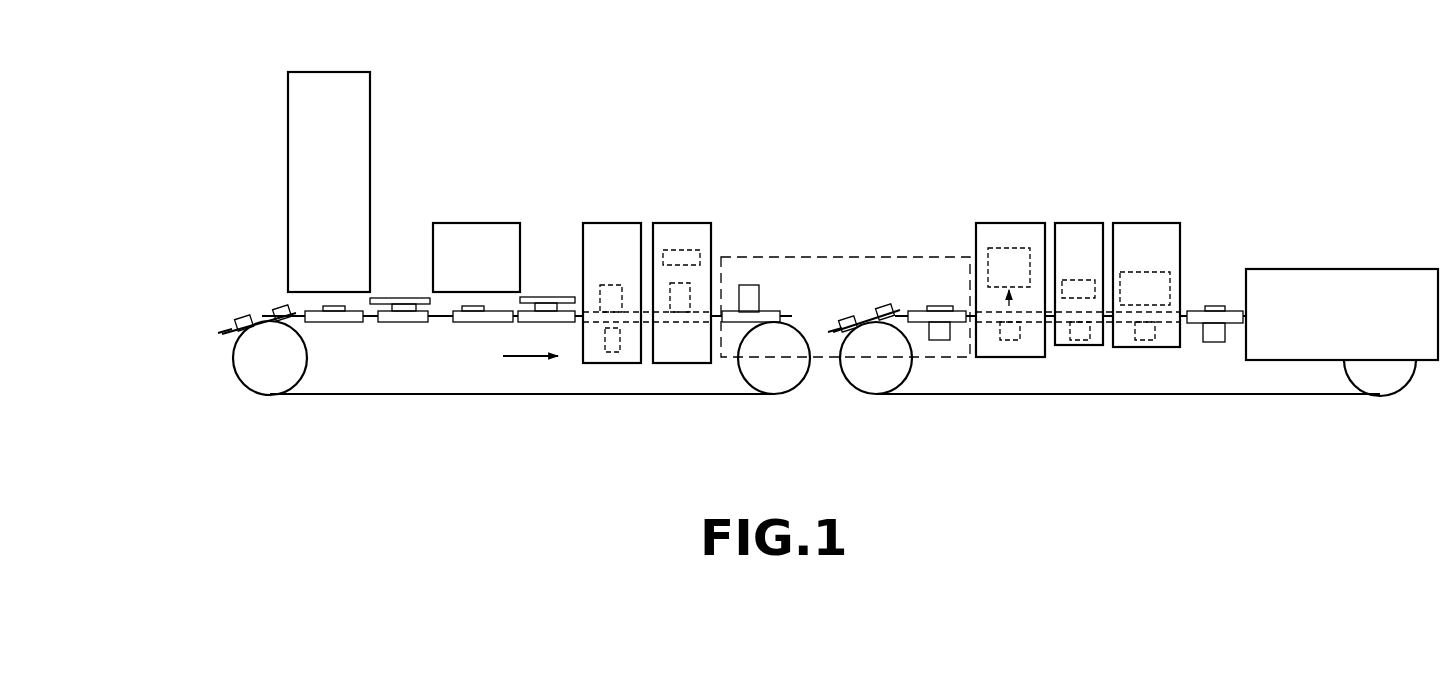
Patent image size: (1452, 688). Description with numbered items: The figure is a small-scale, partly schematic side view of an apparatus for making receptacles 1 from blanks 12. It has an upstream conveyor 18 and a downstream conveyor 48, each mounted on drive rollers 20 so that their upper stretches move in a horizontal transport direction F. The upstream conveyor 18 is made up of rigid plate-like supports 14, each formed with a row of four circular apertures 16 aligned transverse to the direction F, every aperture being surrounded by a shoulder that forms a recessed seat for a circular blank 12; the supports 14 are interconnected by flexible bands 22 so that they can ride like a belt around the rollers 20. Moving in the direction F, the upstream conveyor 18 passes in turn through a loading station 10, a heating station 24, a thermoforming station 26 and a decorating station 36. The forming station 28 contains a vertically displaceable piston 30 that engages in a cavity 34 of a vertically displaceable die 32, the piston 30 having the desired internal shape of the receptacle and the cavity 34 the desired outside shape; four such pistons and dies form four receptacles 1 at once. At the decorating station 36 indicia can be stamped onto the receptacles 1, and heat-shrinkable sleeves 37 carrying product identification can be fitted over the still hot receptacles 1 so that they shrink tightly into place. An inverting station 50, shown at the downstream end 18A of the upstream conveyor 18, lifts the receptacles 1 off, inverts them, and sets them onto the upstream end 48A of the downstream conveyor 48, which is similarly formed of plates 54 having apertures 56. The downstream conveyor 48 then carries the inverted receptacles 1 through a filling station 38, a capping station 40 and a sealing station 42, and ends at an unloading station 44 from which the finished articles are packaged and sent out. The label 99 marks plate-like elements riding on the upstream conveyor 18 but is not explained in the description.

The loading station 10 is at (302, 128).
The blanks 12 is at (397, 310).
The plate-like supports 14 is at (280, 310).
The circular apertures 16 is at (263, 318).
The upstream conveyor 18 is at (210, 325).
The downstream end of the upstream conveyor 18A is at (776, 297).
The drive rollers 20 is at (262, 372).
The flexible bands 22 is at (372, 322).
The heating station 24 is at (474, 240).
The thermoforming station 26 is at (586, 212).
The station 28 is at (582, 365).
The piston 30 is at (616, 352).
The die 32 is at (616, 240).
The cavity 34 is at (606, 300).
The decorating station 36 is at (691, 236).
The heat-shrinkable sleeves 37 is at (678, 252).
The receptacles 1 is at (690, 290).
The filling station 38 is at (1018, 236).
The capping station 40 is at (1085, 238).
The sealing station 42 is at (1156, 238).
The unloading station 44 is at (1359, 284).
The downstream conveyor 48 is at (856, 402).
The upstream end of the downstream conveyor 48A is at (954, 292).
The inverting station 50 is at (882, 256).
The plates 54 is at (952, 296).
The apertures 56 is at (876, 318).
The plates 99 is at (525, 305).
The transport direction F is at (532, 358).